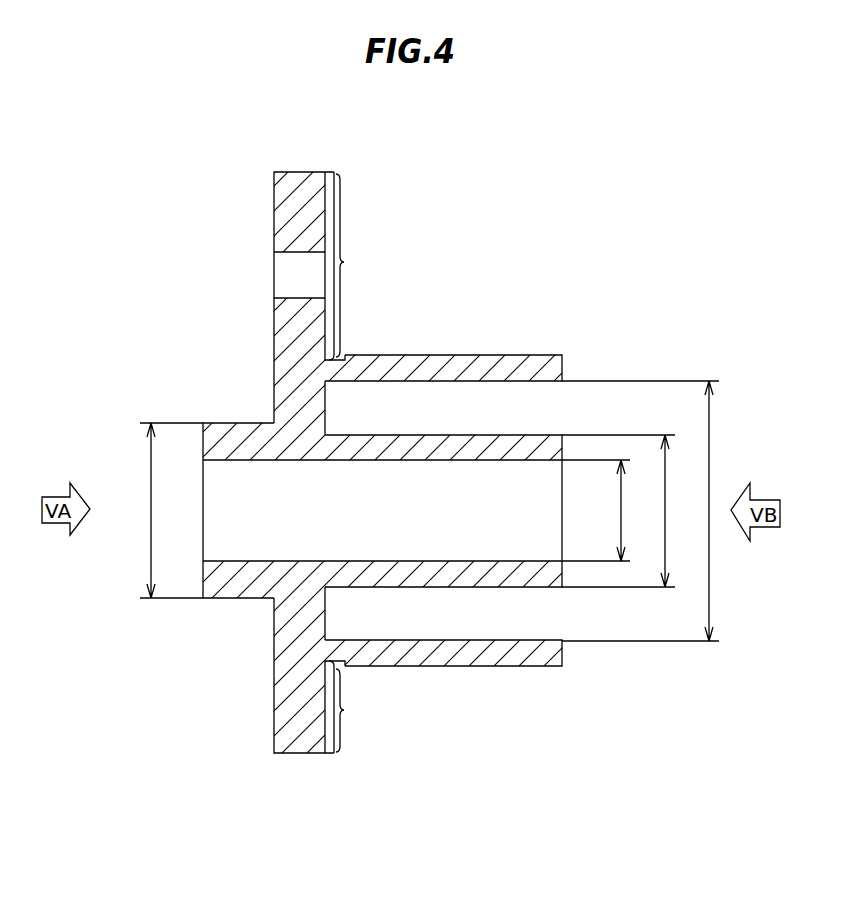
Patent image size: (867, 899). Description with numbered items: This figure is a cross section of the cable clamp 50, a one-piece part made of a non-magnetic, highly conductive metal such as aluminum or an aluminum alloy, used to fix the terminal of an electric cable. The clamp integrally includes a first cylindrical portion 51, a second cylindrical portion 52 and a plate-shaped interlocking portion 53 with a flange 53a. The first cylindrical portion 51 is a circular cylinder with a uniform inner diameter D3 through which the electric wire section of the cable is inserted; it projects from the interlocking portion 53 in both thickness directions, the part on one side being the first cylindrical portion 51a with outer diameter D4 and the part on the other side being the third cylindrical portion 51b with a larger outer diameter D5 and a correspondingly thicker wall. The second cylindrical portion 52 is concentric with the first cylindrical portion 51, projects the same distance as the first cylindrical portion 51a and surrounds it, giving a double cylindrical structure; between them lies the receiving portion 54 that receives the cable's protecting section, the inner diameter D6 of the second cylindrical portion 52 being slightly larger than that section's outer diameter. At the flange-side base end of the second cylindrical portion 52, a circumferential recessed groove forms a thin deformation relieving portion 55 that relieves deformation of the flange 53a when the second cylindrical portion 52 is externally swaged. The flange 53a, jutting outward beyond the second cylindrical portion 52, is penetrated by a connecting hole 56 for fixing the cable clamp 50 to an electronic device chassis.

The cable clamp 50 is at (217, 670).
The first cylindrical portion 51 is at (450, 575).
The first cylindrical portion 51a is at (382, 510).
The third cylindrical portion 51b is at (232, 433).
The second cylindrical portion 52 is at (407, 360).
The interlocking portion 53 is at (282, 348).
The flange 53a is at (357, 462).
The receiving portion 54 is at (462, 398).
The deformation relieving portion 55 is at (343, 356).
The connecting hole 56 is at (288, 273).
The inner diameter of first cylindrical portion D3 is at (596, 510).
The outer diameter of first cylindrical portion 51a D4 is at (618, 511).
The outer diameter of third cylindrical portion D5 is at (159, 510).
The inner diameter of second cylindrical portion D6 is at (640, 511).